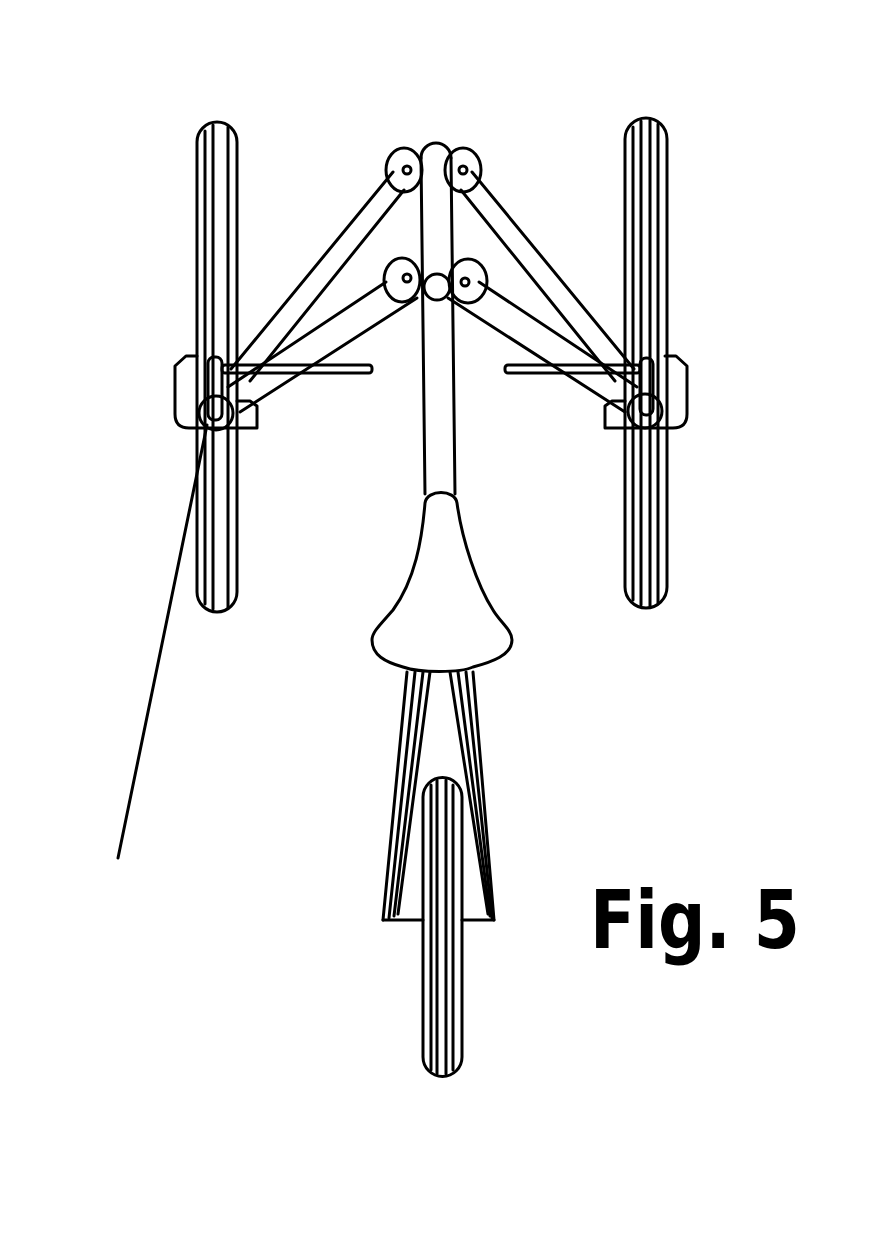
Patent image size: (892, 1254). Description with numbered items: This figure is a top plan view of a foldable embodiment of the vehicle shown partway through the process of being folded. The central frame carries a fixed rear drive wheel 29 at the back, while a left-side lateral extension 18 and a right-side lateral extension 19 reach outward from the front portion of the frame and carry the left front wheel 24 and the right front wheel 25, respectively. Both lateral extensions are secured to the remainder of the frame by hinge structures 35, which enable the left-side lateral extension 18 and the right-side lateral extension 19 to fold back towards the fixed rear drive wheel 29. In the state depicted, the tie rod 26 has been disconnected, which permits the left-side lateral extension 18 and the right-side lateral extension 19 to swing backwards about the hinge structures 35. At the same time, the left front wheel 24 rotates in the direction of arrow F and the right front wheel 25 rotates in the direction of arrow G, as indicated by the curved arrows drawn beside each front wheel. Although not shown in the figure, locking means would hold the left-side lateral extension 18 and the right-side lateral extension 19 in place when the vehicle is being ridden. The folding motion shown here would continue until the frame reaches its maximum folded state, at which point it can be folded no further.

The left-side lateral extension 18 is at (357, 235).
The right-side lateral extension 19 is at (533, 317).
The hinge structures 35 is at (527, 247).
The left front wheel 24 is at (223, 532).
The right front wheel 25 is at (638, 508).
The tie rod 26 is at (147, 708).
The fixed rear drive wheel 29 is at (440, 1020).
The arrow F is at (185, 142).
The arrow G is at (717, 133).